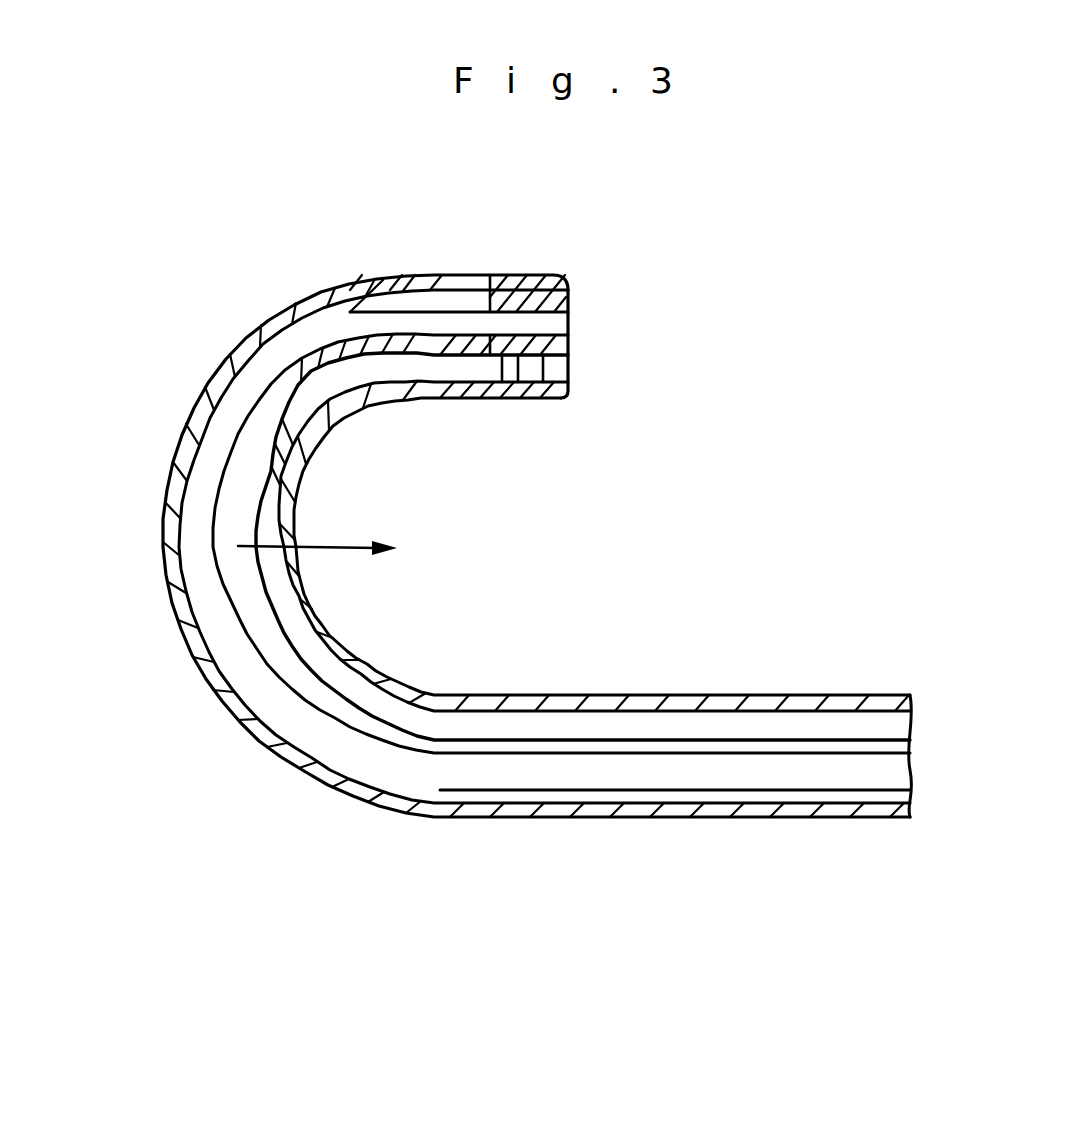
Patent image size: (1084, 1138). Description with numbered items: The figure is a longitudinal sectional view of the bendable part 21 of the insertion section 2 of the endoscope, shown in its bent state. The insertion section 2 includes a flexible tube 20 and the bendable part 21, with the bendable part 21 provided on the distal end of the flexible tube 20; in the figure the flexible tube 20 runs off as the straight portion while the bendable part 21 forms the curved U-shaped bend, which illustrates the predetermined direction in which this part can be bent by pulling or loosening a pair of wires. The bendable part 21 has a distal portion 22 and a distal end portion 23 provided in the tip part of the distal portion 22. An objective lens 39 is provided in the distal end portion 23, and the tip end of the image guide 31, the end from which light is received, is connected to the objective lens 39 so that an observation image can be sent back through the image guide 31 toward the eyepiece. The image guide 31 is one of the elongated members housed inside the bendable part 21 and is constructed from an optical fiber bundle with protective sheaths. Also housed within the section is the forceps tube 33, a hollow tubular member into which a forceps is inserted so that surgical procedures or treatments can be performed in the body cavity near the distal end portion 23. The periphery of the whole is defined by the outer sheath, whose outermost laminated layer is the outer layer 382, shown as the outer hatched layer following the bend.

The insertion section 2 is at (652, 862).
The flexible tube 20 is at (445, 830).
The bendable part 21 is at (150, 587).
The distal portion 22 is at (568, 252).
The distal end portion 23 is at (570, 420).
The image guide 31 is at (303, 440).
The forceps tube 33 is at (240, 472).
The objective lens 39 is at (558, 367).
The outer layer 382 is at (312, 772).